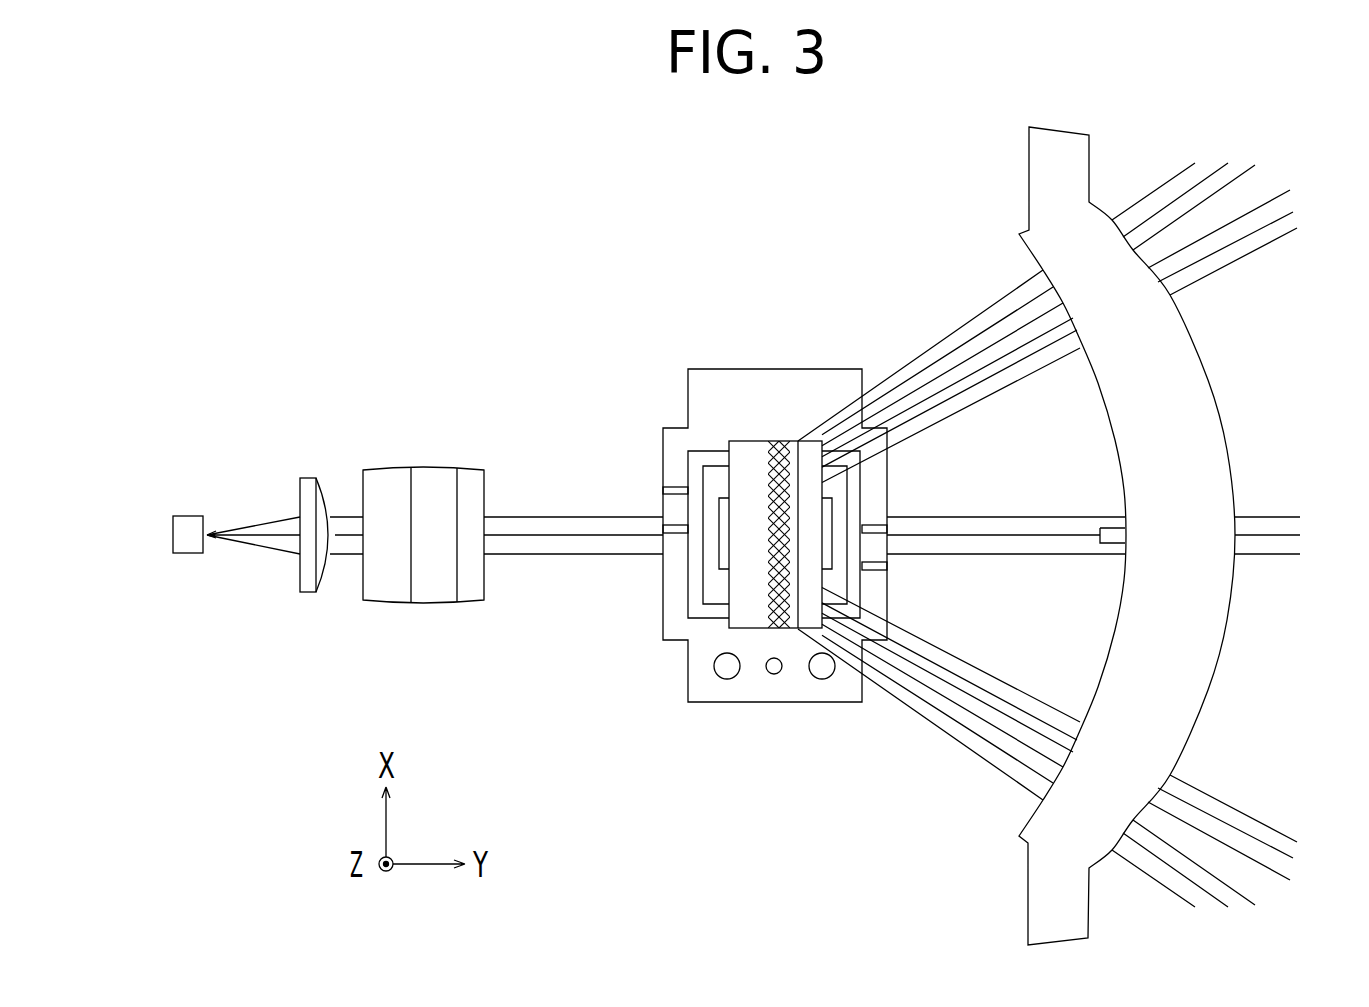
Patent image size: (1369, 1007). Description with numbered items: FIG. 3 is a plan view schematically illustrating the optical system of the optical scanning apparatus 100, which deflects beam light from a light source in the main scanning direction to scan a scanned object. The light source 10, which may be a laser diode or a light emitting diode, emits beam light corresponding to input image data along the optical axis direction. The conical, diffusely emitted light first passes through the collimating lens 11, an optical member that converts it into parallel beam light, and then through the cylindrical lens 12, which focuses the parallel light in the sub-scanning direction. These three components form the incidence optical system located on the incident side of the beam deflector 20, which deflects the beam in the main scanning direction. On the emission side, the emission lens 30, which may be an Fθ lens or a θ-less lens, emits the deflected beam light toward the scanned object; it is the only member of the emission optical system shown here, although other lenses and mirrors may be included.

The optical scanning apparatus 100 is at (557, 273).
The light source 10 is at (185, 523).
The collimating lens 11 is at (305, 470).
The cylindrical lens 12 is at (425, 470).
The beam deflector 20 is at (760, 345).
The emission lens 30 is at (1040, 182).